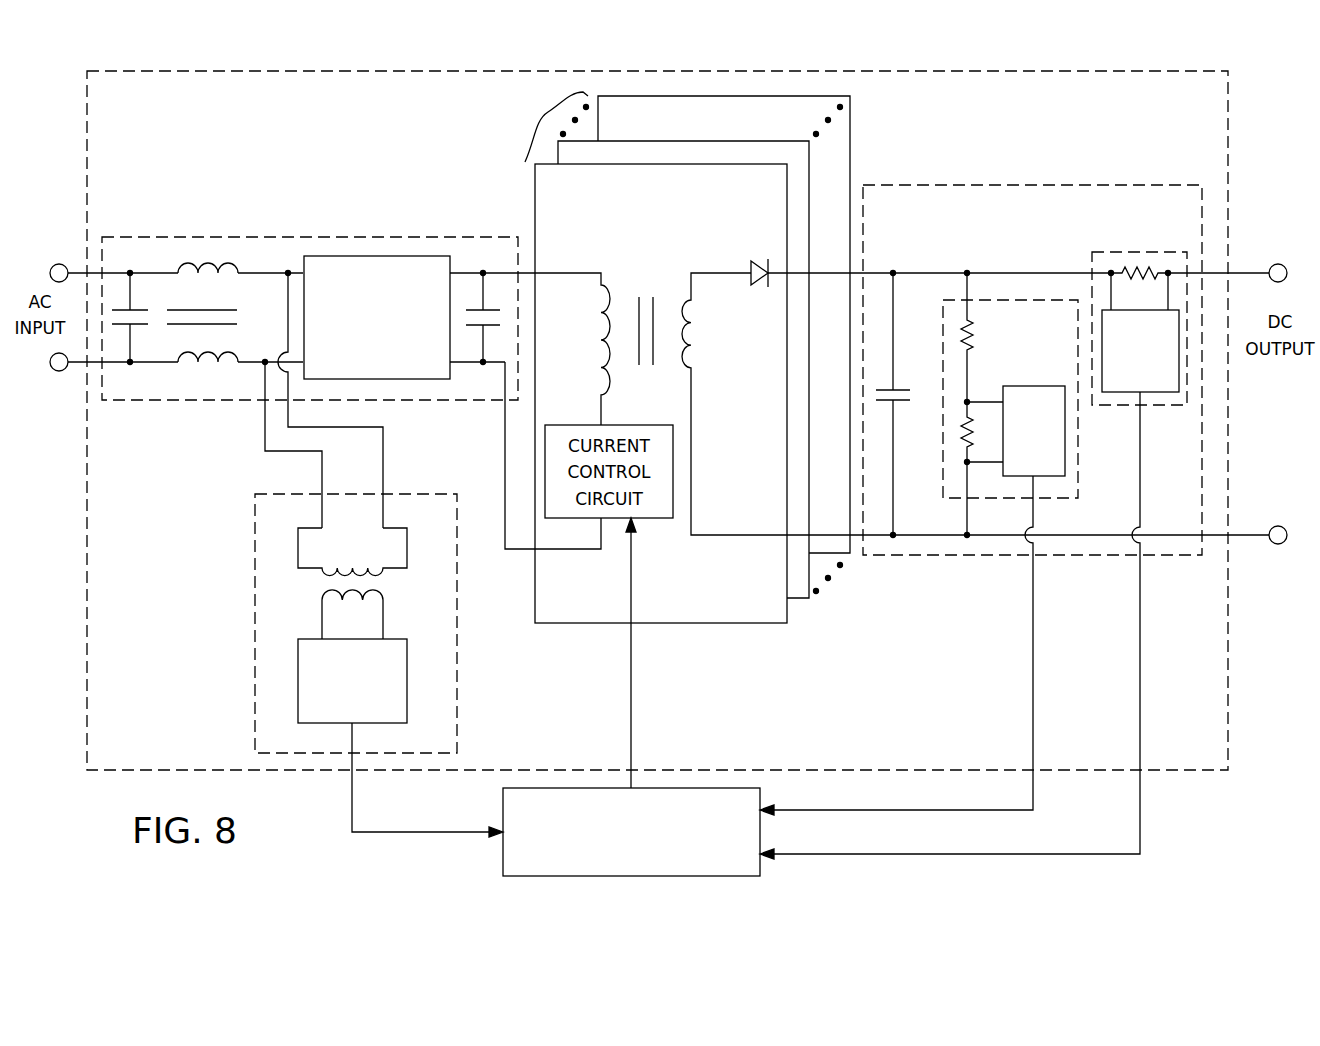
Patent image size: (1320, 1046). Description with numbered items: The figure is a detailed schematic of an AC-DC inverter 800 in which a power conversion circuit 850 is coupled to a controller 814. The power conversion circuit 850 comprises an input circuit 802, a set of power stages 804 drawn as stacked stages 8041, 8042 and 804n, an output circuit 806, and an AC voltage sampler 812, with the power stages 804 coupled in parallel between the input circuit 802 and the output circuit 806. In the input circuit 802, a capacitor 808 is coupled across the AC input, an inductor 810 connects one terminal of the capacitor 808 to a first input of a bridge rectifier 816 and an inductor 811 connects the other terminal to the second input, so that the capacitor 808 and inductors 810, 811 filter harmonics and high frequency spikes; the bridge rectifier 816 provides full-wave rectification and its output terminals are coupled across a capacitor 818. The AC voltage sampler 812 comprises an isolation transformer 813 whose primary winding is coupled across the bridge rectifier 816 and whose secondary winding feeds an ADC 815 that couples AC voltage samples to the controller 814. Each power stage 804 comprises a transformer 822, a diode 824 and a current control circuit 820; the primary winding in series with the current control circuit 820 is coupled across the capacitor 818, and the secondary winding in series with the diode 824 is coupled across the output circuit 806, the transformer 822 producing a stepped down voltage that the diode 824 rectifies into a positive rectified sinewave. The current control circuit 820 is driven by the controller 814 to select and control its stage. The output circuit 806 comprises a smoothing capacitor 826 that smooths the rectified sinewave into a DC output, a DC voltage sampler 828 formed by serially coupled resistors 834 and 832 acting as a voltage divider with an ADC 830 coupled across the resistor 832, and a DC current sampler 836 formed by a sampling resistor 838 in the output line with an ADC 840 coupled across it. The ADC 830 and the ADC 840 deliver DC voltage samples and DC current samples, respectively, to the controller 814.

The AC-DC inverter 800 is at (1205, 832).
The input circuit 802 is at (382, 237).
The power stages 804 is at (669, 343).
The first power stage 8041 is at (718, 208).
The second power stage 8042 is at (809, 157).
The nth power stage 804n is at (852, 112).
The output circuit 806 is at (1069, 184).
The capacitor 808 is at (141, 308).
The inductor 810 is at (208, 273).
The inductor 811 is at (208, 362).
The AC voltage sampler 812 is at (430, 494).
The isolation transformer 813 is at (396, 586).
The controller 814 is at (712, 788).
The ADC 815 is at (336, 708).
The bridge rectifier 816 is at (361, 362).
The capacitor 818 is at (493, 310).
The current control circuit 820 is at (563, 424).
The transformer 822 is at (647, 278).
The diode 824 is at (750, 284).
The smoothing capacitor 826 is at (904, 390).
The DC voltage sampler 828 is at (1048, 499).
The ADC 830 is at (1019, 460).
The resistor 832 is at (962, 426).
The resistor 834 is at (975, 324).
The DC current sampler 836 is at (1173, 405).
The sampling resistor 838 is at (1142, 268).
The ADC 840 is at (1125, 373).
The power conversion circuit 850 is at (1230, 97).